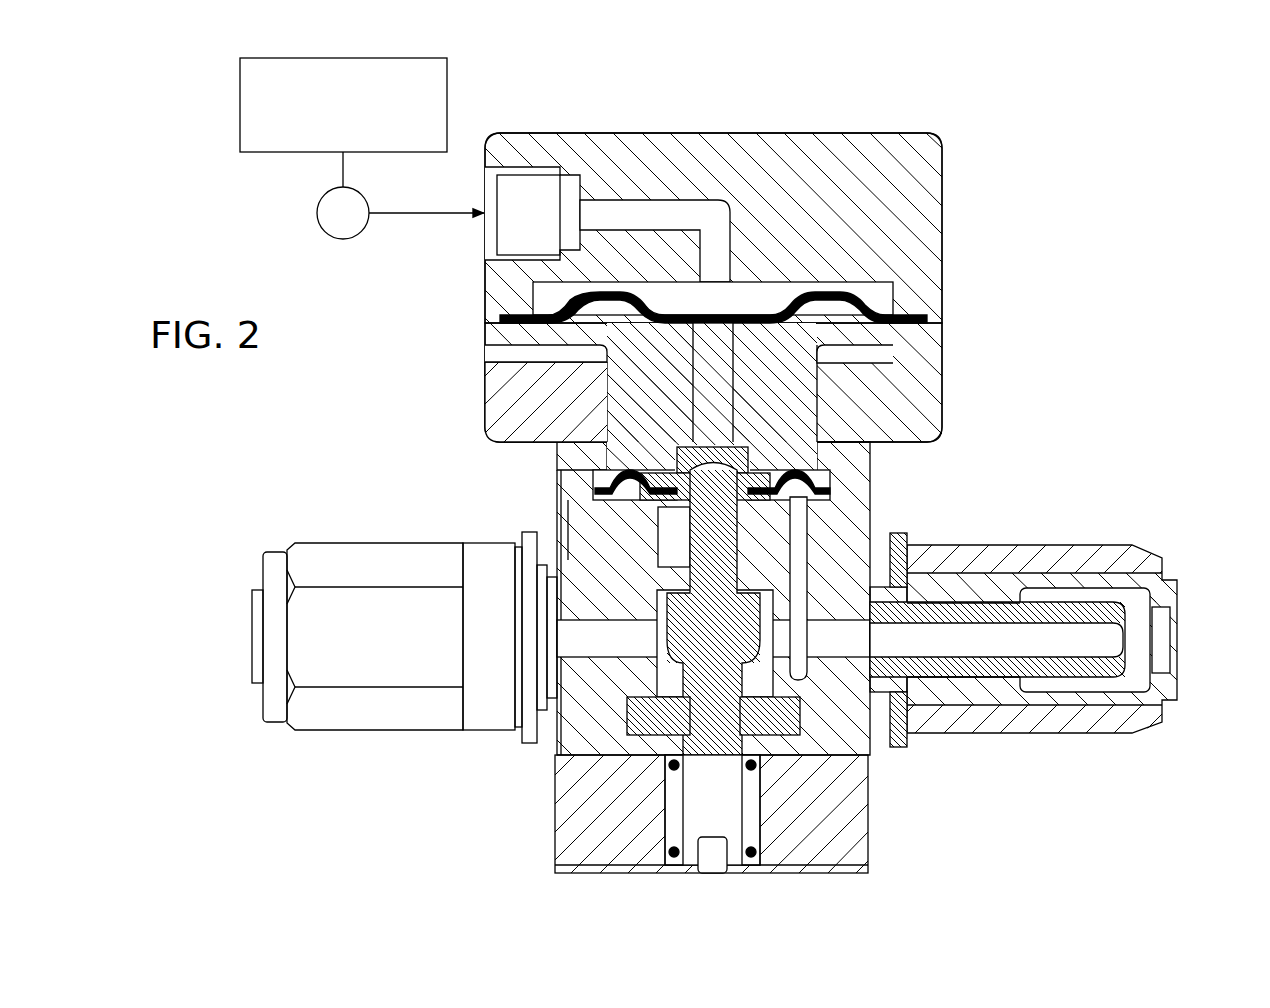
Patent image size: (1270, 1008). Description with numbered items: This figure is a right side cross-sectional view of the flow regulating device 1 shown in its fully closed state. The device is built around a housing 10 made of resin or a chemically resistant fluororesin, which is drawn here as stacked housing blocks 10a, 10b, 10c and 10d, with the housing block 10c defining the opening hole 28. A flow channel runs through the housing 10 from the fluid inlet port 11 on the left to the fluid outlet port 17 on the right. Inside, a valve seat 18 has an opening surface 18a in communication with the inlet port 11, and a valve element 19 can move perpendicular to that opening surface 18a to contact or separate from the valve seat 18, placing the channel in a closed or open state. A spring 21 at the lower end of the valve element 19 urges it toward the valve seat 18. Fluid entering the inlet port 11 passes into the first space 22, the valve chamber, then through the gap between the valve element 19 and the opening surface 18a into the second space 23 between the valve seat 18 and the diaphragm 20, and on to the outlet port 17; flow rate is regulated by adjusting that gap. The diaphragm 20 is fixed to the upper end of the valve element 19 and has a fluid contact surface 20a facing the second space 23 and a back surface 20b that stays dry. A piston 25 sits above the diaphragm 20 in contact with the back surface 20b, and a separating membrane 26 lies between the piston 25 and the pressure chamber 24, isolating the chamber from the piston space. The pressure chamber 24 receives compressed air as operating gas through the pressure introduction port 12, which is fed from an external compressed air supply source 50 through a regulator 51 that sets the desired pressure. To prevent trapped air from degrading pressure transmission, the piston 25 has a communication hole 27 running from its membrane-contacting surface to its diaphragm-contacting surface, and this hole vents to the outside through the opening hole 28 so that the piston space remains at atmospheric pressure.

The flow regulating device 1 is at (1070, 148).
The housing 10 is at (767, 301).
The lower body portion 10a is at (870, 843).
The middle body portion 10b is at (855, 508).
The housing block 10c is at (942, 385).
The upper body portion 10d is at (942, 187).
The fluid inlet port 11 is at (252, 636).
The pressure introduction port 12 is at (497, 235).
The fluid outlet port 17 is at (1177, 643).
The valve seat 18 is at (677, 636).
The opening surface 18a is at (672, 606).
The valve element 19 is at (760, 620).
The diaphragm 20 is at (712, 434).
The fluid contact surface 20a is at (680, 500).
The back surface 20b is at (752, 470).
The spring 21 is at (672, 850).
The first space 22 is at (668, 686).
The second space 23 is at (645, 510).
The pressure chamber 24 is at (878, 290).
The piston 25 is at (600, 300).
The separating membrane 26 is at (770, 318).
The communication hole 27 is at (733, 365).
The opening hole 28 is at (497, 352).
The compressed air supply source 50 is at (447, 90).
The regulator 51 is at (322, 237).